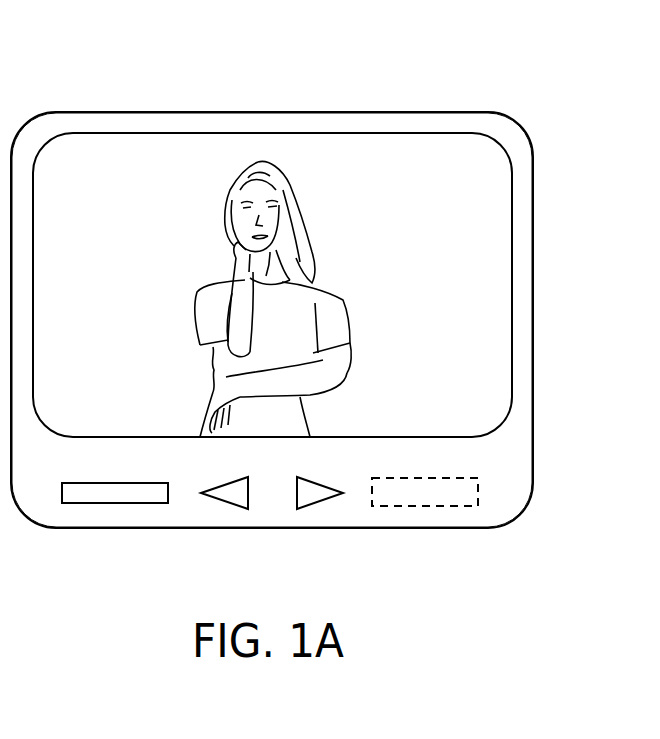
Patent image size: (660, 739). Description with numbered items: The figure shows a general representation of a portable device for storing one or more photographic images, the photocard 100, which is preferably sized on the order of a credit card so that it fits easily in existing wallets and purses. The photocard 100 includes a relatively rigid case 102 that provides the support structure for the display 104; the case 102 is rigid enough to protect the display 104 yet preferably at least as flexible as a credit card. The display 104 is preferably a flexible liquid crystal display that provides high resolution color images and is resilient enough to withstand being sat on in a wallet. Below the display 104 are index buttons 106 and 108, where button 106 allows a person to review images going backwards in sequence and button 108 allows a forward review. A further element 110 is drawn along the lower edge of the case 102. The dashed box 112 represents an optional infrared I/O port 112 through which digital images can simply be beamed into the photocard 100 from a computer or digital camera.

The photocard 100 is at (574, 133).
The case 102 is at (534, 410).
The display 104 is at (251, 148).
The index button 106 is at (232, 497).
The index button 108 is at (310, 497).
The progress bar/button 110 is at (84, 497).
The infrared I/O port 112 is at (423, 503).